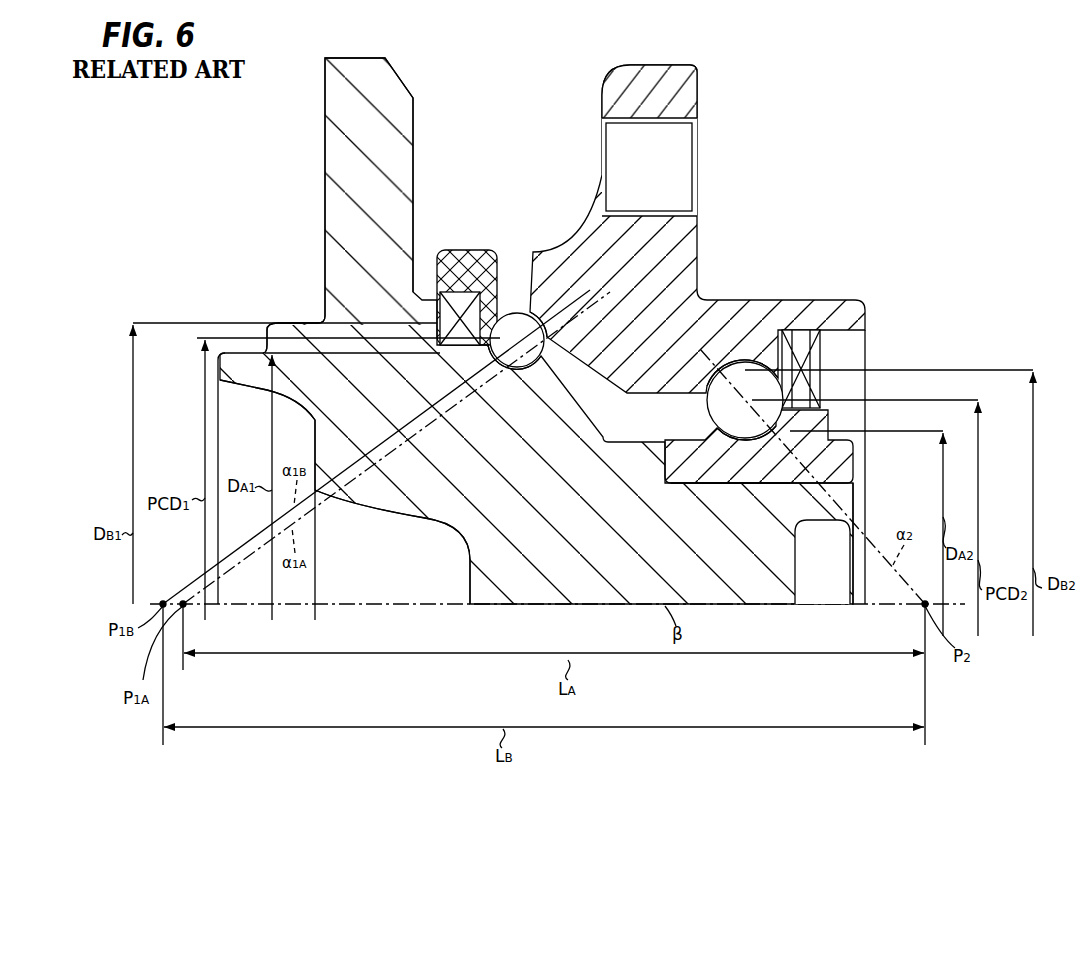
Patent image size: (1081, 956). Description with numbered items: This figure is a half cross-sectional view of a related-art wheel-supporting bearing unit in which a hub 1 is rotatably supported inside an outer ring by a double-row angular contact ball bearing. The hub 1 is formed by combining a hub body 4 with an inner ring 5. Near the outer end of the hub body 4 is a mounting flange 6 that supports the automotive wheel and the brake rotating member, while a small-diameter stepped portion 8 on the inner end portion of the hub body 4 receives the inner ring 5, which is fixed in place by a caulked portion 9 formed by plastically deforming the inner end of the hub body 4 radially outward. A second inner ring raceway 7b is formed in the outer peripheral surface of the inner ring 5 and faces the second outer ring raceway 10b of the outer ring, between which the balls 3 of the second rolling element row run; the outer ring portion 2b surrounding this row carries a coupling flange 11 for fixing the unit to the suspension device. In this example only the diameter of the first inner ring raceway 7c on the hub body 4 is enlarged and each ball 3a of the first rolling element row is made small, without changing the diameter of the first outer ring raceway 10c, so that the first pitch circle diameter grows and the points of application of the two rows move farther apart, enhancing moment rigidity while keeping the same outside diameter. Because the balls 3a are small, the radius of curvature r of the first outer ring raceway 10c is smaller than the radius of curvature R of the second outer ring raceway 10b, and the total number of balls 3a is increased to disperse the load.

The hub 1 is at (530, 542).
The outer raceway surface of outer member 2b is at (593, 254).
The balls 3 is at (485, 365).
The ball 3a is at (448, 268).
The hub body 4 is at (303, 348).
The inner ring 5 is at (866, 400).
The mounting flange 6 is at (332, 88).
The second inner ring raceway 7b is at (770, 485).
The first inner ring raceway 7c is at (426, 518).
The small-diameter stepped portion 8 is at (742, 483).
The caulked portion 9 is at (848, 462).
The second outer ring raceway 10b is at (742, 362).
The first outer ring raceway 10c is at (512, 312).
The coupling flange 11 is at (692, 93).
The radius of curvature r is at (509, 312).
The radius of curvature R is at (770, 355).